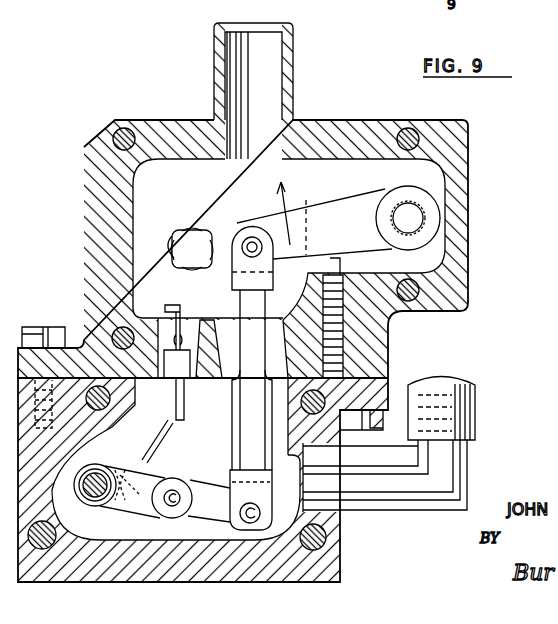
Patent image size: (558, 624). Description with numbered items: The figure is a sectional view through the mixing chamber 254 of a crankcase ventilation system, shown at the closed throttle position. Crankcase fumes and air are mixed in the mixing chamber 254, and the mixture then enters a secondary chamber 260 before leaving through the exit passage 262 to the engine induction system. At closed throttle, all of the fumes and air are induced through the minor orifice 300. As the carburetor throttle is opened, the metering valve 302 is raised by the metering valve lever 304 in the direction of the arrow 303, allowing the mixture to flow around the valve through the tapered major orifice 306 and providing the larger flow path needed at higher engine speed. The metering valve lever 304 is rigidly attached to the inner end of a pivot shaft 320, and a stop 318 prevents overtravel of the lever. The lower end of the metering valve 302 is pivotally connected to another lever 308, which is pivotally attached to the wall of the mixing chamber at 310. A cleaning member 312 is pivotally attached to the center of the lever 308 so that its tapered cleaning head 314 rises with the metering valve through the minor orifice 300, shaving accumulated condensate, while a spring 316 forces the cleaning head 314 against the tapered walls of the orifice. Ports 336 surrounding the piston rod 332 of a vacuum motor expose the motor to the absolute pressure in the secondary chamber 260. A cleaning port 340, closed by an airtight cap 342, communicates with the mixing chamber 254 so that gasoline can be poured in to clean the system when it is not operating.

The mixing chamber 254 is at (232, 448).
The secondary chamber 260 is at (246, 181).
The exit passage 262 is at (265, 71).
The minor orifice 300 is at (183, 306).
The metering valve 302 is at (238, 392).
The arrow 303 is at (276, 204).
The metering valve lever 304 is at (360, 243).
The tapered major orifice 306 is at (220, 332).
The lever 308 is at (208, 502).
The pivotal attachment 310 is at (84, 500).
The cleaning member 312 is at (176, 413).
The cleaning head 314 is at (168, 313).
The spring 316 is at (145, 455).
The stop 318 is at (343, 266).
The pivot shaft 320 is at (415, 218).
The piston rod 332 is at (190, 228).
The ports 336 is at (176, 236).
The cleaning port 340 is at (385, 497).
The airtight cap 342 is at (478, 428).